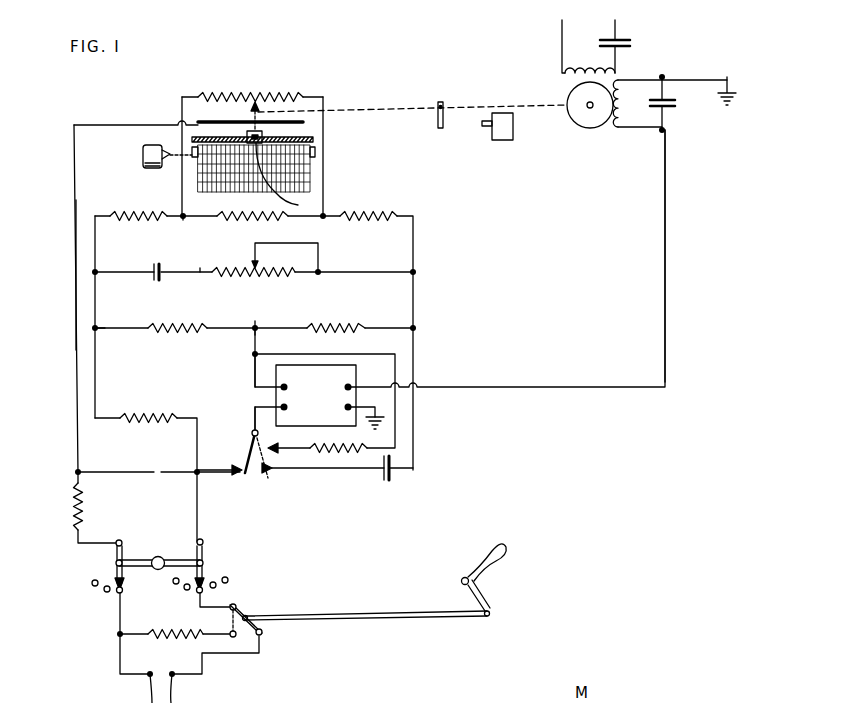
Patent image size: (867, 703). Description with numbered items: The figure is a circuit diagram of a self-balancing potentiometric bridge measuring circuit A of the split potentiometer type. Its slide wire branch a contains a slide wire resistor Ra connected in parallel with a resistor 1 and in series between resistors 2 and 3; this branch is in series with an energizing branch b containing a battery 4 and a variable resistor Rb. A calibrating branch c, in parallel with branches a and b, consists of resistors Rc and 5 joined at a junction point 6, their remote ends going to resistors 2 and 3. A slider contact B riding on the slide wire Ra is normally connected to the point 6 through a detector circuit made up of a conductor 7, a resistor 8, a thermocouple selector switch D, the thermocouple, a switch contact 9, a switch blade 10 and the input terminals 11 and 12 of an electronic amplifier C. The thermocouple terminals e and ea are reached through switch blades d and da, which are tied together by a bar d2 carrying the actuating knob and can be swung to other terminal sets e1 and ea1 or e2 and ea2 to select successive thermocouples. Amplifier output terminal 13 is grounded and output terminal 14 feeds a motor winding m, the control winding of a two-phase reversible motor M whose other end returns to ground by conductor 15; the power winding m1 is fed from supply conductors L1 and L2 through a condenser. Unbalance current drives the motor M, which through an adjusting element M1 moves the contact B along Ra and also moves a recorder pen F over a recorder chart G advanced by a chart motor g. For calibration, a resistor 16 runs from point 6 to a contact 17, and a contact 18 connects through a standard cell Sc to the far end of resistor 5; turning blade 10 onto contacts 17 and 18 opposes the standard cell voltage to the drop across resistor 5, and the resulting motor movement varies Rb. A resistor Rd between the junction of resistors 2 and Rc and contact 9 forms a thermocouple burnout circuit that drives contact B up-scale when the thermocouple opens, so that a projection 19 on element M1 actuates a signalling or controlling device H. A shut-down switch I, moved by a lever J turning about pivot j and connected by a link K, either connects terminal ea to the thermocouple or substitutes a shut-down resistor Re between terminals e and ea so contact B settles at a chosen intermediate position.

The slide wire resistor Ra is at (249, 85).
The slider contact B is at (305, 122).
The recorder chart G is at (215, 185).
The recorder pen F is at (282, 179).
The chart motor g is at (143, 156).
The resistor 1 is at (256, 212).
The resistor 2 is at (140, 211).
The resistor 3 is at (371, 206).
The slide wire branch a is at (199, 226).
The energizing branch b is at (199, 268).
The battery 4 is at (156, 284).
The variable resistor Rb is at (250, 278).
The conductor 7 is at (76, 279).
The calibrating branch c is at (122, 326).
The resistor Rc is at (160, 334).
The junction point 6 is at (253, 323).
The resistor 5 is at (330, 321).
The electronic amplifier C is at (321, 406).
The input terminal 12 is at (255, 372).
The input terminal 11 is at (255, 416).
The output terminal 13 is at (376, 408).
The resistor 16 is at (336, 446).
The switch contact 17 is at (269, 448).
The switch contact 9 is at (238, 472).
The switch blade 10 is at (244, 474).
The switch contact 18 is at (274, 474).
The standard cell Sc is at (388, 480).
The resistor Rd is at (160, 410).
The resistor 8 is at (74, 503).
The input or thermocouple selector switch D is at (213, 551).
The bar d2 is at (142, 561).
The switch blade d is at (113, 570).
The switch blade da is at (206, 571).
The thermocouple terminal e2 is at (92, 586).
The thermocouple terminal e1 is at (104, 592).
The thermocouple terminal e is at (117, 596).
The thermocouple terminal ea2 is at (173, 584).
The thermocouple terminal ea1 is at (184, 591).
The thermocouple terminal ea is at (197, 596).
The shut-down resistor Re is at (175, 642).
The shut-down switch I is at (244, 612).
The link K is at (340, 612).
The manually adjustable lever J is at (488, 548).
The supporting pivot j is at (461, 584).
The projection 19 is at (438, 125).
The adjusting element M1 is at (508, 103).
The signalling or controlling device H is at (513, 133).
The motor M is at (590, 128).
The alternating current supply conductor L1 is at (560, 28).
The power winding m1 is at (589, 70).
The alternating current supply conductor L2 is at (627, 26).
The motor winding m is at (630, 104).
The conductor 15 is at (736, 85).
The output terminal 14 is at (665, 348).
The measuring circuit A is at (458, 247).